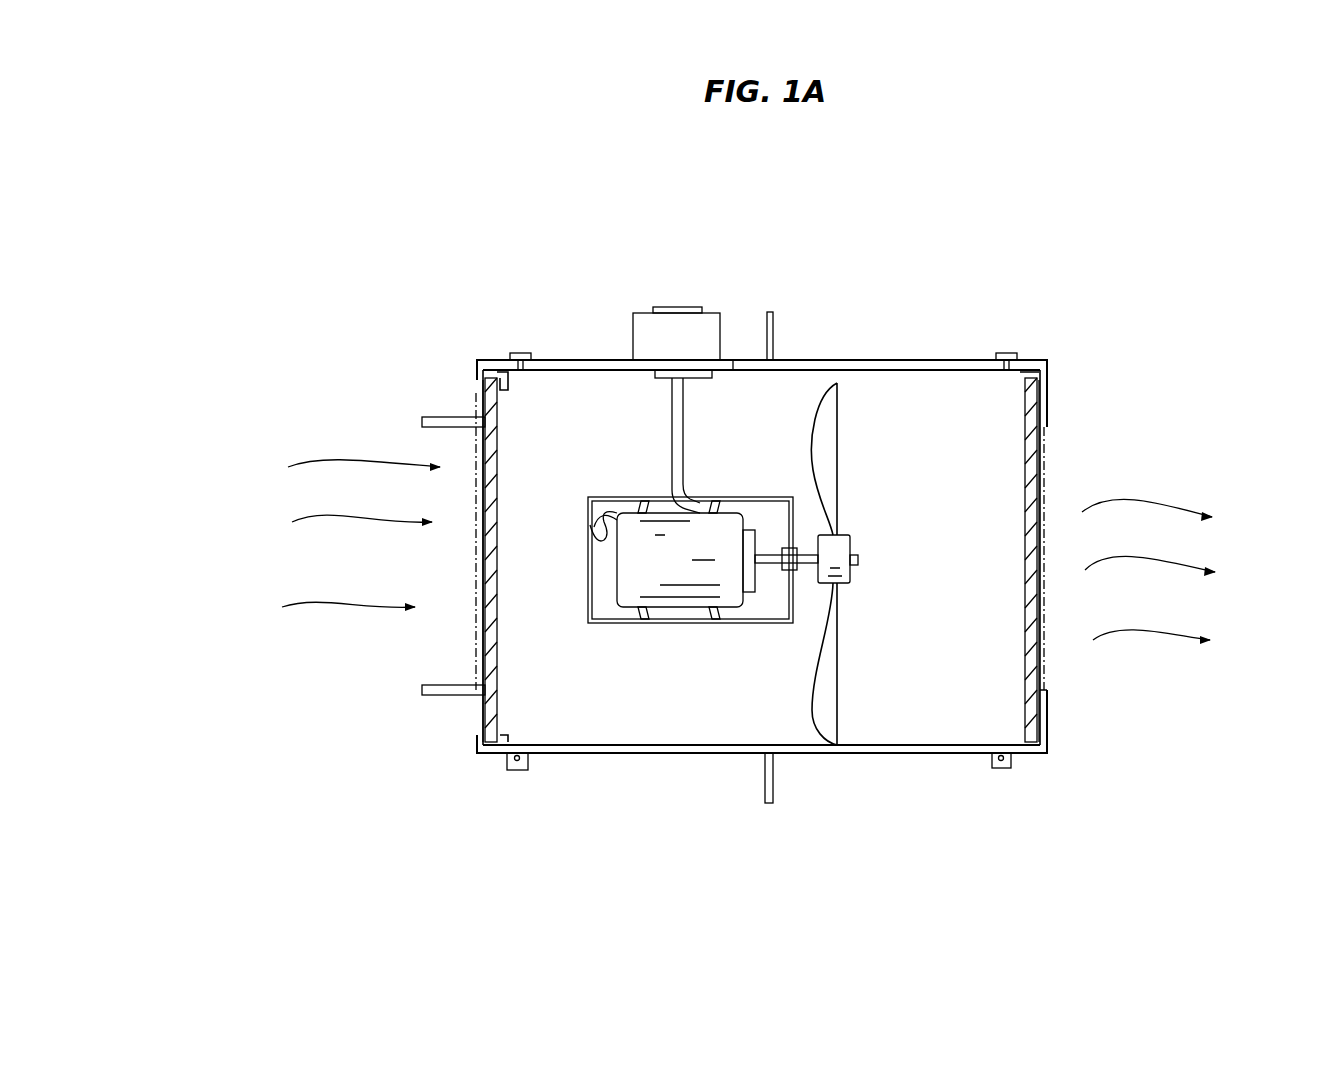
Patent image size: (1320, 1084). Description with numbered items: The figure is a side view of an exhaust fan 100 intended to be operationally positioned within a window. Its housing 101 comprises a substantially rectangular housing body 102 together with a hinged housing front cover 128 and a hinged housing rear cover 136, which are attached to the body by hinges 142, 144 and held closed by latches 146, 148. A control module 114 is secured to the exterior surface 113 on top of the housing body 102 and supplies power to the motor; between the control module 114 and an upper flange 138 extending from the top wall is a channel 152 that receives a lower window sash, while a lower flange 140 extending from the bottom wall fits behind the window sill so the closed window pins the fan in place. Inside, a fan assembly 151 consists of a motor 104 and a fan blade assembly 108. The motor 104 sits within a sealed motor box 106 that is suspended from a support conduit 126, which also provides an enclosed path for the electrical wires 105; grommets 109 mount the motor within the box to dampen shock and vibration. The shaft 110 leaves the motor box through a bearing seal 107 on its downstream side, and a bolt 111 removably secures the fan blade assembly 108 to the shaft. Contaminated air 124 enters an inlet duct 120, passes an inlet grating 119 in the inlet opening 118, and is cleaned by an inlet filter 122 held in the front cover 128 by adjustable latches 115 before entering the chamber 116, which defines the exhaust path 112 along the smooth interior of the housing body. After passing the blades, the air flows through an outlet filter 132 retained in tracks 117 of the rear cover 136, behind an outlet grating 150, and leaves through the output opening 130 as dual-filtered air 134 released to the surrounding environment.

The exhaust fan 100 is at (1155, 855).
The housing 101 is at (1075, 208).
The housing body 102 is at (960, 400).
The motor 104 is at (622, 590).
The electrical wires 105 is at (590, 525).
The sealed motor box 106 is at (612, 623).
The bearing seal 107 is at (788, 572).
The fan blade assembly 108 is at (840, 452).
The grommets 109 is at (705, 623).
The shaft 110 is at (833, 587).
The bolt 111 is at (855, 560).
The exhaust path 112 is at (761, 557).
The exterior surface 113 is at (822, 350).
The control module 114 is at (670, 305).
The adjustable latches 115 is at (508, 385).
The chamber 116 is at (900, 722).
The tracks 117 is at (1040, 755).
The inlet opening 118 is at (350, 450).
The inlet grating 119 is at (472, 672).
The inlet duct 120 is at (432, 699).
The inlet filter 122 is at (480, 562).
The contaminated air 124 is at (292, 487).
The support conduit 126 is at (683, 422).
The housing front cover 128 is at (475, 372).
The output opening 130 is at (1085, 478).
The outlet filter 132 is at (1048, 662).
The dual-filtered air 134 is at (1178, 510).
The housing rear cover 136 is at (1050, 362).
The upper flange 138 is at (769, 310).
The lower flange 140 is at (769, 803).
The hinge 142 is at (516, 772).
The hinge 144 is at (1000, 770).
The latch 146 is at (520, 352).
The latch 148 is at (1006, 352).
The outlet grating 150 is at (1043, 672).
The fan assembly 151 is at (860, 642).
The channel 152 is at (738, 358).